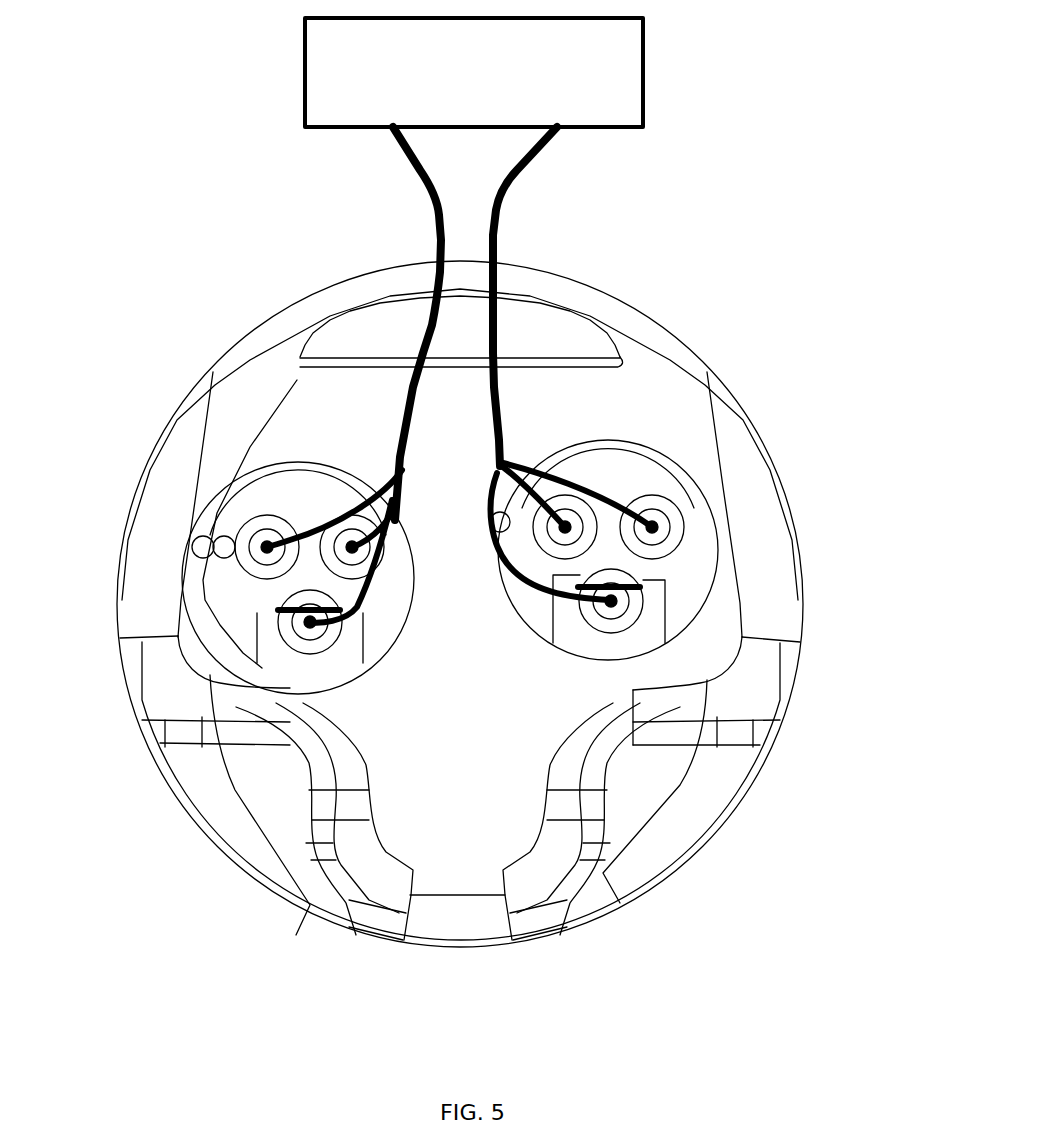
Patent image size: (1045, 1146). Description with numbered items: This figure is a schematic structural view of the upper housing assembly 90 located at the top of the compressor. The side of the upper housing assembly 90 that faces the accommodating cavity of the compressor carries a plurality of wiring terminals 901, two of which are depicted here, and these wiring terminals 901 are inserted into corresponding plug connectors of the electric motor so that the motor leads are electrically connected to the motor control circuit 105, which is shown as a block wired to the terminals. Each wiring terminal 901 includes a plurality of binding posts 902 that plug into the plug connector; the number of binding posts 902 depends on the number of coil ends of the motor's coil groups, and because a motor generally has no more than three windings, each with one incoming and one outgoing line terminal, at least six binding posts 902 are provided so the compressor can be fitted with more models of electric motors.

The motor control circuit 105 is at (643, 65).
The upper housing assembly 90 is at (377, 440).
The wiring terminal 901 is at (257, 633).
The binding post 902 is at (265, 505).